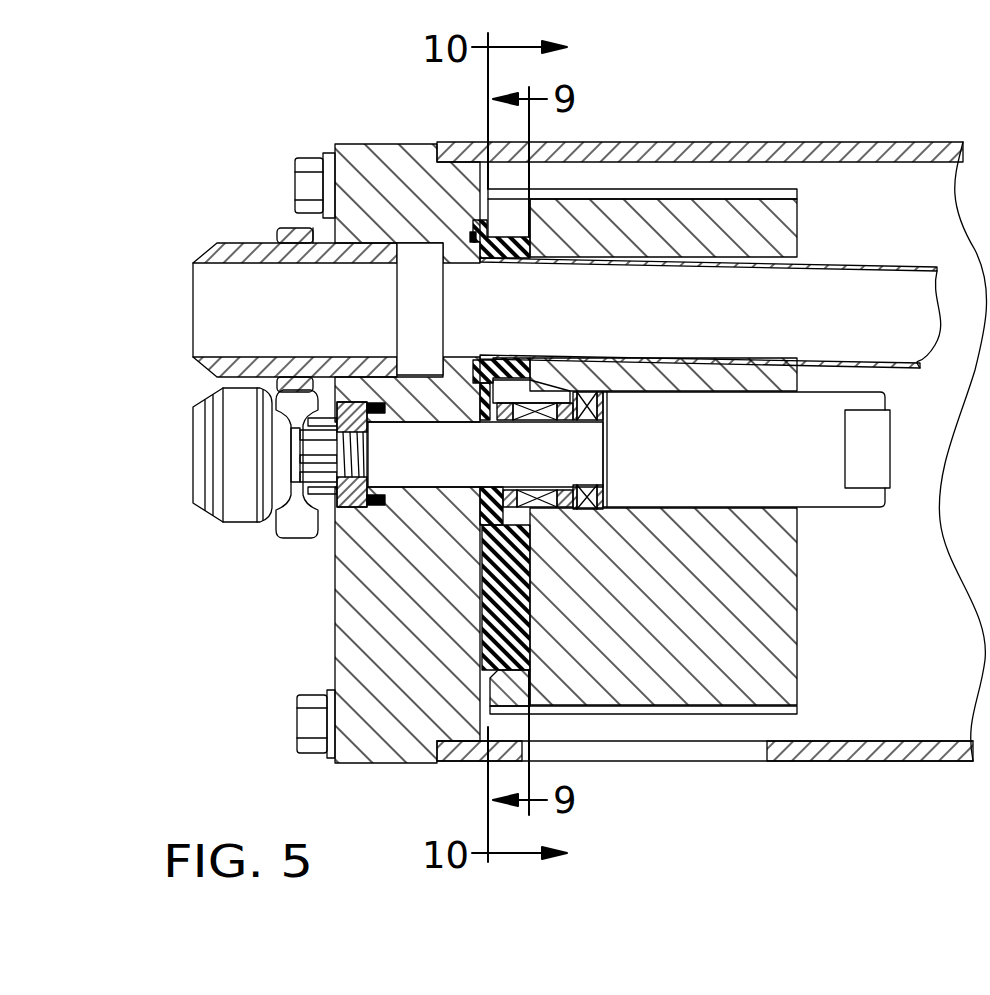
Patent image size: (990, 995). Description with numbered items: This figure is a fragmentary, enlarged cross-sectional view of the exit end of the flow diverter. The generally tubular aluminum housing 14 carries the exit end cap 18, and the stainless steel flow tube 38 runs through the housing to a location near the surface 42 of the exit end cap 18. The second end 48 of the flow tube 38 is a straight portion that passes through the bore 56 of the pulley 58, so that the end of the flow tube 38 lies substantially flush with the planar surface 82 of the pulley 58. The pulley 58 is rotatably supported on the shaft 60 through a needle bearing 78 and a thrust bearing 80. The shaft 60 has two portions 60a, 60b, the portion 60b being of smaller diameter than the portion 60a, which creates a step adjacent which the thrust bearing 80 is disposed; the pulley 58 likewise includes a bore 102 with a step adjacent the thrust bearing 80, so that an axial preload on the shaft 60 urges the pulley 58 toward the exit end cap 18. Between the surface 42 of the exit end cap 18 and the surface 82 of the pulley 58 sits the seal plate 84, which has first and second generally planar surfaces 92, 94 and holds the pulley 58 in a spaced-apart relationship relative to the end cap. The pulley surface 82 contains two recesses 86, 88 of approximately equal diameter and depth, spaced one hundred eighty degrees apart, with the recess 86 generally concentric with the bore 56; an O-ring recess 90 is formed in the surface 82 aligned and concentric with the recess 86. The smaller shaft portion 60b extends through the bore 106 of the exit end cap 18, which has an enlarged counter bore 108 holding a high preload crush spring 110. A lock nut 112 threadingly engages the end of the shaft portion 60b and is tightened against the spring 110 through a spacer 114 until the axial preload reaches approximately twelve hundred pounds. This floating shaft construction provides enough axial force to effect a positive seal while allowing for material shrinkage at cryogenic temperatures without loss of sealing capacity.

The housing 14 is at (830, 752).
The exit end cap 18 is at (345, 655).
The flow tube 38 is at (865, 258).
The surface 42 is at (490, 732).
The second end 48 is at (668, 265).
The bore 56 is at (746, 356).
The pulley 58 is at (777, 604).
The shaft 60 is at (833, 498).
The portion 60a is at (786, 469).
The portion 60b is at (537, 460).
The needle bearing 78 is at (537, 486).
The thrust bearing 80 is at (588, 483).
The surface 82 is at (476, 228).
The seal plate 84 is at (480, 625).
The recess 86 is at (522, 238).
The recess 88 is at (510, 672).
The O-ring recess 90 is at (494, 225).
The first surface 92 is at (480, 587).
The second surface 94 is at (503, 497).
The bore 102 is at (657, 393).
The bore 106 is at (440, 422).
The counter bore 108 is at (372, 512).
The crush spring 110 is at (385, 500).
The lock nut 112 is at (335, 455).
The spacer 114 is at (375, 525).